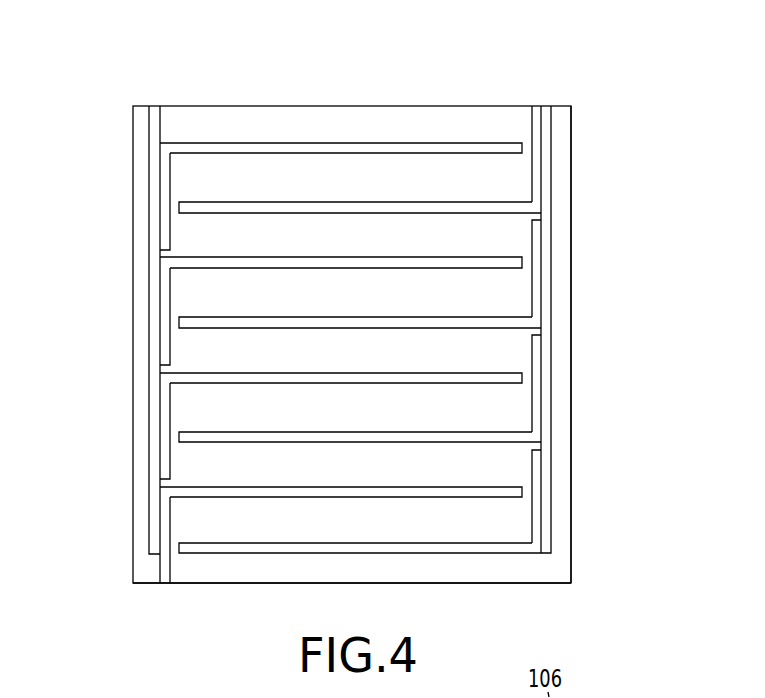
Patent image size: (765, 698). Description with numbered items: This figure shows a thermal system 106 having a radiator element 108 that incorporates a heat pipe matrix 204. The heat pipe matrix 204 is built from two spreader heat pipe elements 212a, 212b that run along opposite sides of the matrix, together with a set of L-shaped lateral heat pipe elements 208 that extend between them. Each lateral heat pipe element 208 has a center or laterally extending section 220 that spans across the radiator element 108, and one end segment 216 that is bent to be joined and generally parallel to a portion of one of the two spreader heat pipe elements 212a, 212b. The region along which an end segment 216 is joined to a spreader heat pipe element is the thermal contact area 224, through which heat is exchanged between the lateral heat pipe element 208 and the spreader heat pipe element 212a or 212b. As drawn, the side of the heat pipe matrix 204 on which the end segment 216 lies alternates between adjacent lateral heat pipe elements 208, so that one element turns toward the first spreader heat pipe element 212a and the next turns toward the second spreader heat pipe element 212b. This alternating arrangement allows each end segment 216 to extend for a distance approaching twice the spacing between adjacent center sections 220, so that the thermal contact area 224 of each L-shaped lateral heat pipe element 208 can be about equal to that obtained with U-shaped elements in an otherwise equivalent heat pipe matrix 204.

The thermal system 106 is at (333, 88).
The radiator element 108 is at (560, 325).
The heat pipe matrix 204 is at (99, 330).
The lateral heat pipe element 208 is at (290, 148).
The spreader heat pipe element 212a is at (155, 497).
The spreader heat pipe element 212b is at (548, 517).
The end segment 216 is at (163, 205).
The center section 220 is at (395, 553).
The thermal contact area 224 is at (160, 167).